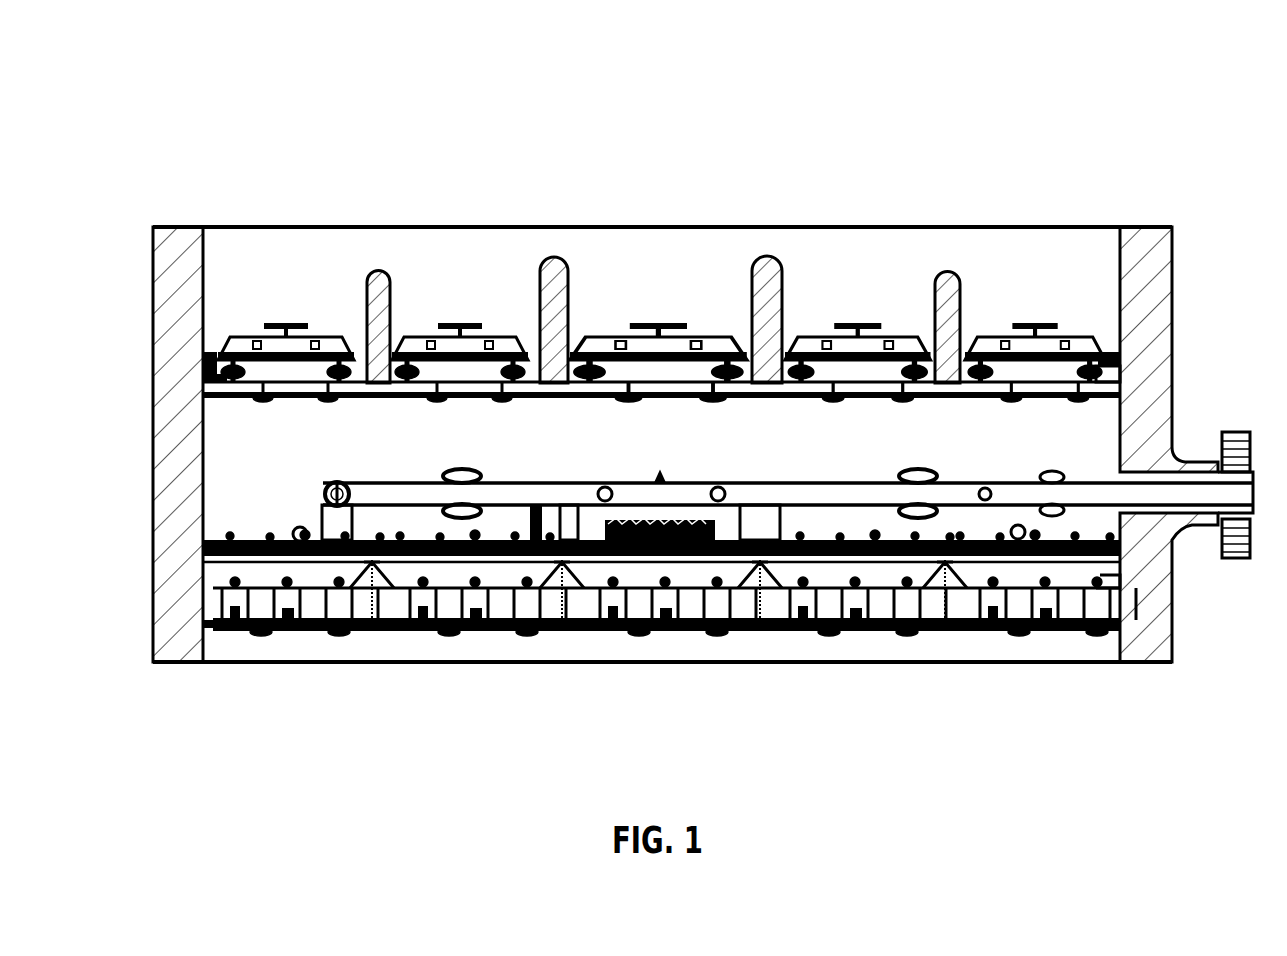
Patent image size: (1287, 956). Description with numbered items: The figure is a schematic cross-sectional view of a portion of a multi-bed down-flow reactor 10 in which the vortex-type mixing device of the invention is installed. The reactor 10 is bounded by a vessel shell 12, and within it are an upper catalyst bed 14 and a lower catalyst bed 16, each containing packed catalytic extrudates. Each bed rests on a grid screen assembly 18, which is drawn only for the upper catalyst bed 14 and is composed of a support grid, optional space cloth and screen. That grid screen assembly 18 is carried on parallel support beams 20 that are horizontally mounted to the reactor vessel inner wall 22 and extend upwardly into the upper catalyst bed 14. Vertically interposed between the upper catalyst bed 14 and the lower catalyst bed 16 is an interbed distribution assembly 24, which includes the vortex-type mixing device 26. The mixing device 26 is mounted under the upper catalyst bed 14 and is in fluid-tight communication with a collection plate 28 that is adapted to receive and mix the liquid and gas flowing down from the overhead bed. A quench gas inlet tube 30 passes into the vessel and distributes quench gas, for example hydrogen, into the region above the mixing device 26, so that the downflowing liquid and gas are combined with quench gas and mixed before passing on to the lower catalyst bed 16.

The multi-bed down-flow reactor 10 is at (1138, 142).
The vessel shell 12 is at (176, 228).
The upper catalyst bed 14 is at (322, 247).
The lower catalyst bed 16 is at (393, 648).
The grid screen assembly 18 is at (1125, 362).
The support beams 20 is at (940, 276).
The reactor vessel inner wall 22 is at (1120, 300).
The interbed distribution assembly 24 is at (1125, 575).
The vortex-type mixing device 26 is at (535, 530).
The collection plate 28 is at (845, 563).
The quench gas inlet tube 30 is at (752, 482).